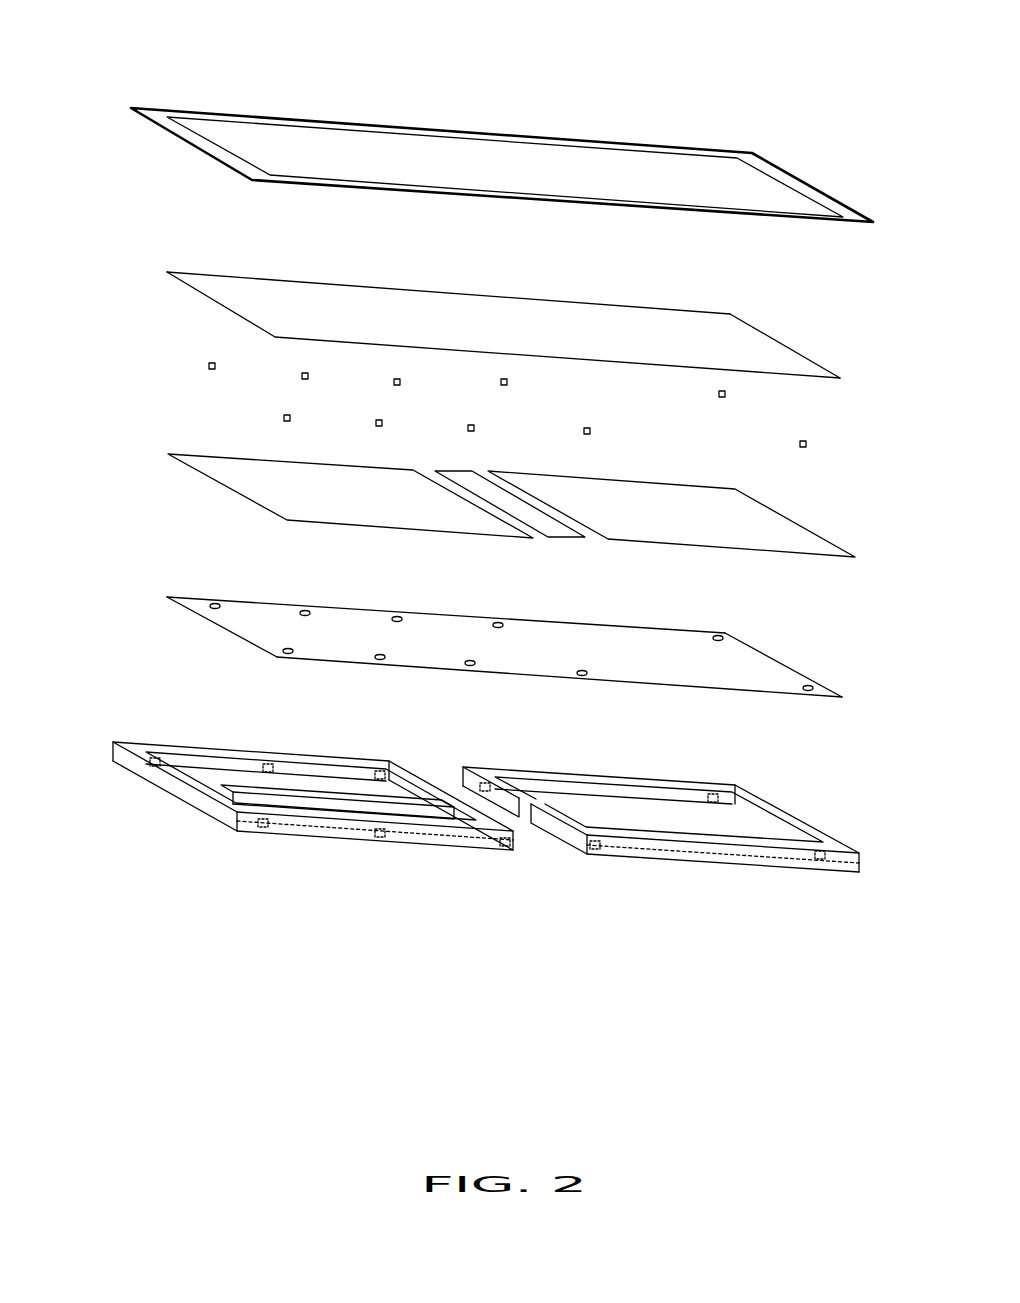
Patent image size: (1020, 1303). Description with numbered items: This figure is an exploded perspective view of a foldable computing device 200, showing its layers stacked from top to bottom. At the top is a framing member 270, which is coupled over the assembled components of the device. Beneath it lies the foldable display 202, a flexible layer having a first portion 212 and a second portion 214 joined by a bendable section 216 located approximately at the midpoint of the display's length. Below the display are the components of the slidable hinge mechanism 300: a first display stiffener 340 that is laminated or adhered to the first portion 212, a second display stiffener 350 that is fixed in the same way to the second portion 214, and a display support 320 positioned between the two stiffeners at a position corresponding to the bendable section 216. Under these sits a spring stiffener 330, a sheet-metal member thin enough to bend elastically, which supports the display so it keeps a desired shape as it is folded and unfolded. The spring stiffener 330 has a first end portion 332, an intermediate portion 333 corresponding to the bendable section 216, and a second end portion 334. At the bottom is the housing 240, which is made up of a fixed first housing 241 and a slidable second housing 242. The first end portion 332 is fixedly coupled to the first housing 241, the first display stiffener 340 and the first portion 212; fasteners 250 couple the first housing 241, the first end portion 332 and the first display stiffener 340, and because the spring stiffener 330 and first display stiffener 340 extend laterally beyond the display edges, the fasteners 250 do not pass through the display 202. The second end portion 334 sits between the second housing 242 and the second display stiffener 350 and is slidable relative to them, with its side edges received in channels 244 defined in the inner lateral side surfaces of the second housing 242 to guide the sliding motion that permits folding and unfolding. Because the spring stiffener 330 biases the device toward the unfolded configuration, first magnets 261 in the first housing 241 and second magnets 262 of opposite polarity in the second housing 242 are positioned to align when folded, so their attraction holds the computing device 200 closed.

The computing device 200 is at (177, 82).
The foldable display 202 is at (817, 343).
The first portion of the foldable display 212 is at (680, 323).
The second portion of the foldable display 214 is at (280, 297).
The bendable section 216 is at (522, 292).
The housing 240 is at (531, 960).
The first housing 241 is at (632, 855).
The second housing 242 is at (430, 847).
The channels 244 is at (250, 768).
The fasteners 250 is at (145, 357).
The first magnets 261 is at (727, 785).
The second magnets 262 is at (155, 762).
The framing member 270 is at (713, 150).
The hinge mechanism 300 is at (180, 549).
The display support 320 is at (548, 527).
The spring stiffener 330 is at (770, 649).
The first end portion of the spring stiffener 332 is at (795, 668).
The intermediate portion of the spring stiffener 333 is at (492, 630).
The second end portion of the spring stiffener 334 is at (238, 622).
The first display stiffener 340 is at (807, 545).
The second display stiffener 350 is at (213, 472).